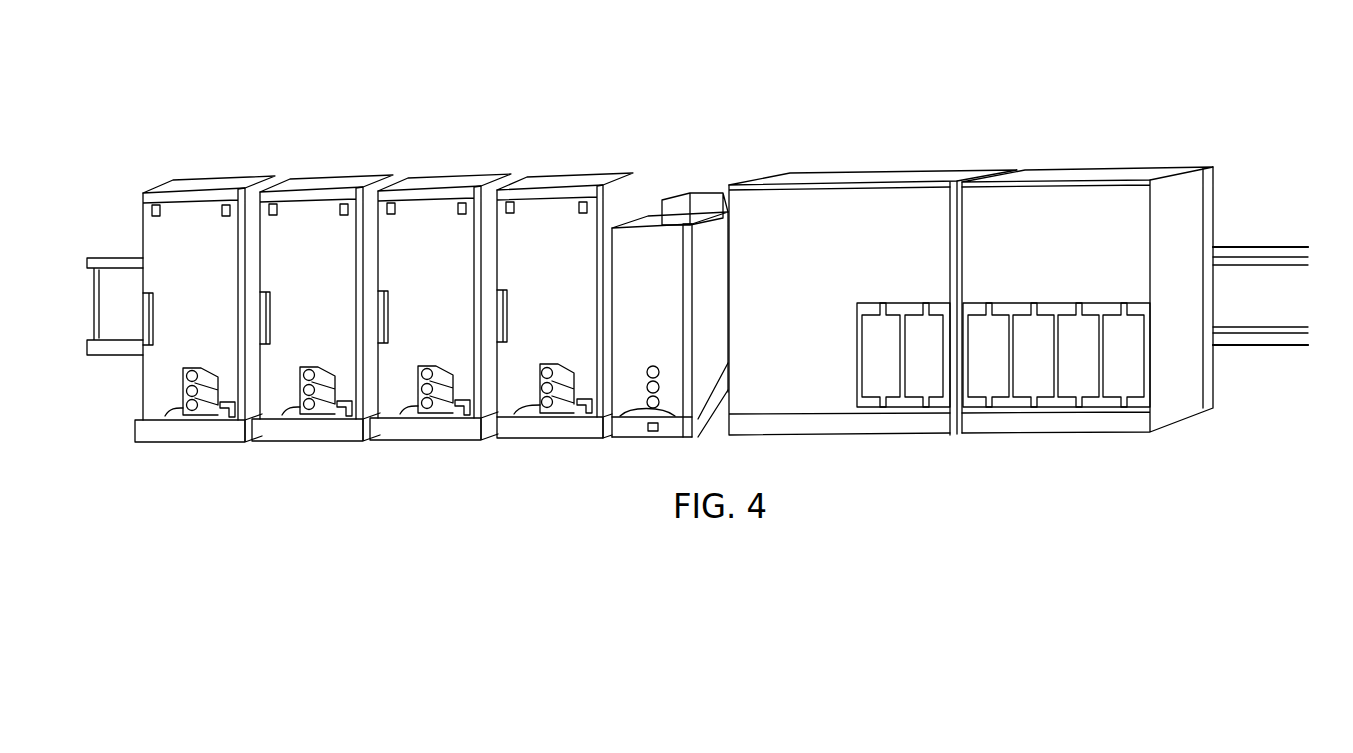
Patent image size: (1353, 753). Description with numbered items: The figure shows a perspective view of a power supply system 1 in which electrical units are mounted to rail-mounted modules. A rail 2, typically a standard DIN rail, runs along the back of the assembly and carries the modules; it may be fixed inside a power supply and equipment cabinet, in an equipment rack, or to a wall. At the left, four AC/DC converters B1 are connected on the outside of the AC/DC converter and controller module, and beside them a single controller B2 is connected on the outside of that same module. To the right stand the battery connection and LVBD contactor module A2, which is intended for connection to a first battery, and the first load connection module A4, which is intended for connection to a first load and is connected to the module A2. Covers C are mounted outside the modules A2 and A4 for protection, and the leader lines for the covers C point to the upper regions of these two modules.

The power supply system 1 is at (469, 529).
The rail 2 is at (1273, 310).
The AC/DC converter B1 is at (181, 228).
The controller B2 is at (637, 245).
The battery connection and LVBD contactor module A2 is at (827, 129).
The first load connection module A4 is at (1109, 129).
The cover C is at (1012, 212).